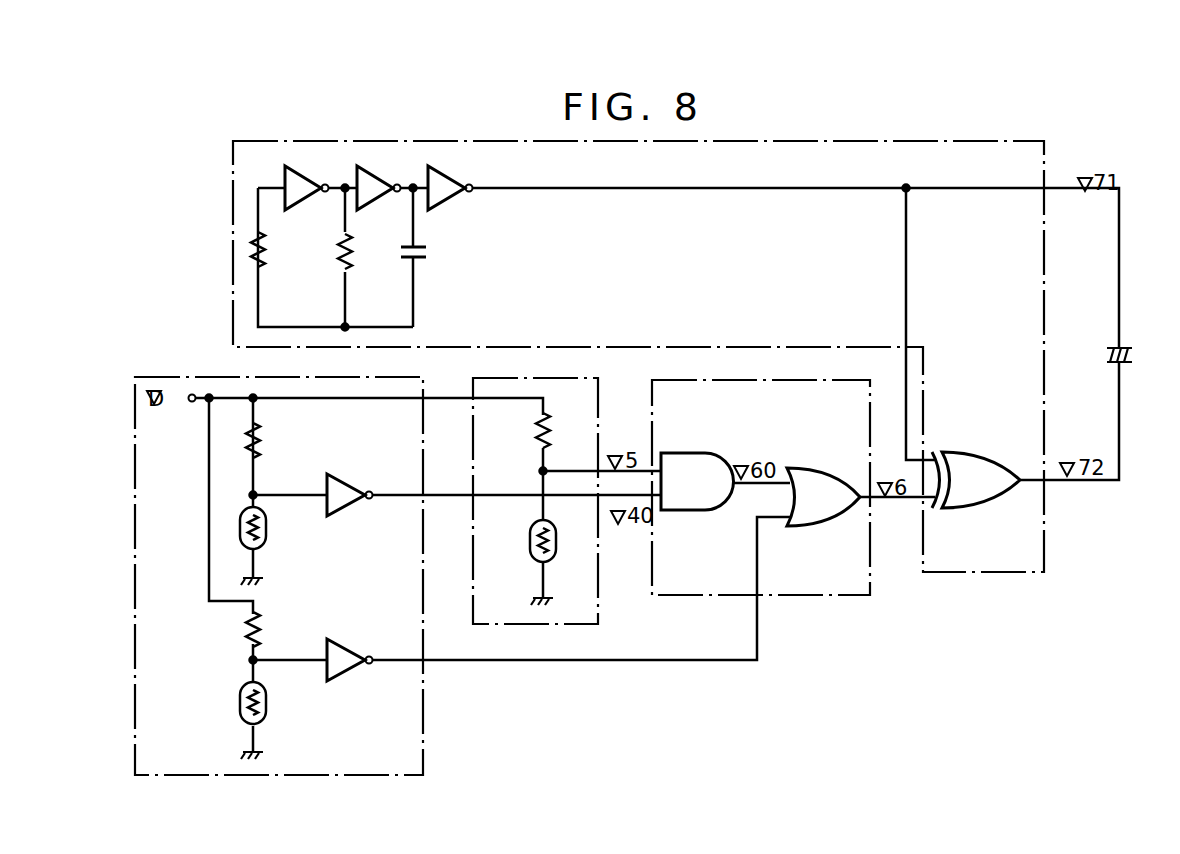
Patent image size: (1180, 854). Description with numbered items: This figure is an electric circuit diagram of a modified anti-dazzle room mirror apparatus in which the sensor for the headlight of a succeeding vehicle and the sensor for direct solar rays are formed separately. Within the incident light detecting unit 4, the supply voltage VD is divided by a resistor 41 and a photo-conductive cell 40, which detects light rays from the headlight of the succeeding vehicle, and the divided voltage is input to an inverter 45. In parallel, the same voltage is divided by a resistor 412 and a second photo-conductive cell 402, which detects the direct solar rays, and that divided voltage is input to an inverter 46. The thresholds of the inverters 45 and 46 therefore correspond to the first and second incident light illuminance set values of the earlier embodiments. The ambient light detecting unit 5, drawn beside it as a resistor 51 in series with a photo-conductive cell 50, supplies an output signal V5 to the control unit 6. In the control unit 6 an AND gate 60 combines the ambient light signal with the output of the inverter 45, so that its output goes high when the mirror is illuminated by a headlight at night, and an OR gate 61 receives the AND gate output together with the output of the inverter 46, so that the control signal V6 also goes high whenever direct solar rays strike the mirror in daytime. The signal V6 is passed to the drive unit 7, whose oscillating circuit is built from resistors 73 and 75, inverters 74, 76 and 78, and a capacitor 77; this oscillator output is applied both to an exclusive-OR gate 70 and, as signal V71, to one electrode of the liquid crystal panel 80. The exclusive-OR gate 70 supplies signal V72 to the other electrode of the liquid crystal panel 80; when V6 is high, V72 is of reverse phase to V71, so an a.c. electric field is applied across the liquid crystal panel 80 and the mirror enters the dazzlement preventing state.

The incident light detecting unit 4 is at (423, 684).
The ambient light detecting unit 5 is at (598, 613).
The control unit 6 is at (686, 597).
The drive unit 7 is at (1046, 177).
The photo-conductive cell 40 is at (267, 536).
The resistor 41 is at (263, 447).
The inverter 45 is at (345, 484).
The inverter 46 is at (352, 650).
The thermistor 50 is at (530, 556).
The resistor 51 is at (533, 432).
The AND gate 60 is at (690, 512).
The OR gate 61 is at (826, 473).
The exclusive-OR gate 70 is at (983, 457).
The resistor 73 is at (268, 250).
The inverter 74 is at (293, 178).
The resistor 75 is at (355, 250).
The inverter 76 is at (366, 178).
The capacitor 77 is at (430, 252).
The inverter 78 is at (437, 178).
The liquid crystal panel 80 is at (1124, 347).
The photo-conductive cell 402 is at (268, 713).
The resistor 412 is at (265, 628).